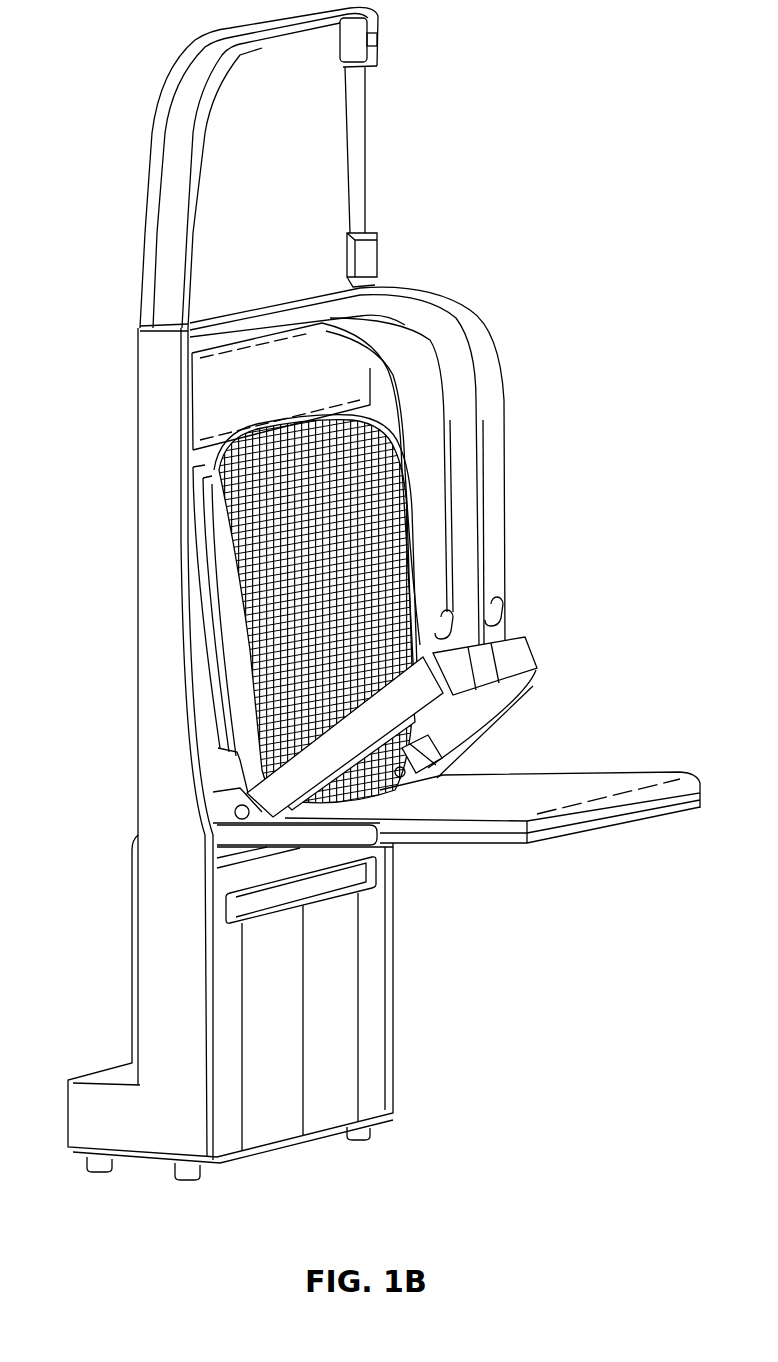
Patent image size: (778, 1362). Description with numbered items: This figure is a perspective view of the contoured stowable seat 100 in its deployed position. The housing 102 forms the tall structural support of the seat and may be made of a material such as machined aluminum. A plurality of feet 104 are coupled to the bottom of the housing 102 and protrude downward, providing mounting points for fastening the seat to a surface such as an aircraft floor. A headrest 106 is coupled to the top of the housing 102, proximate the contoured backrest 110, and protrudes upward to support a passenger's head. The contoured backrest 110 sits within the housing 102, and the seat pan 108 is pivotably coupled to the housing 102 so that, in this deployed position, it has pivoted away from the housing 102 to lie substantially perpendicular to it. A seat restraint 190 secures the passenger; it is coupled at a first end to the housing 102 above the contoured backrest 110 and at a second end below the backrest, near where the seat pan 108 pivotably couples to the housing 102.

The contoured stowable seat 100 is at (537, 204).
The housing 102 is at (160, 750).
The feet 104 is at (202, 1170).
The headrest 106 is at (317, 156).
The seat pan 108 is at (577, 780).
The contoured backrest 110 is at (380, 477).
The seat restraint 190 is at (520, 655).